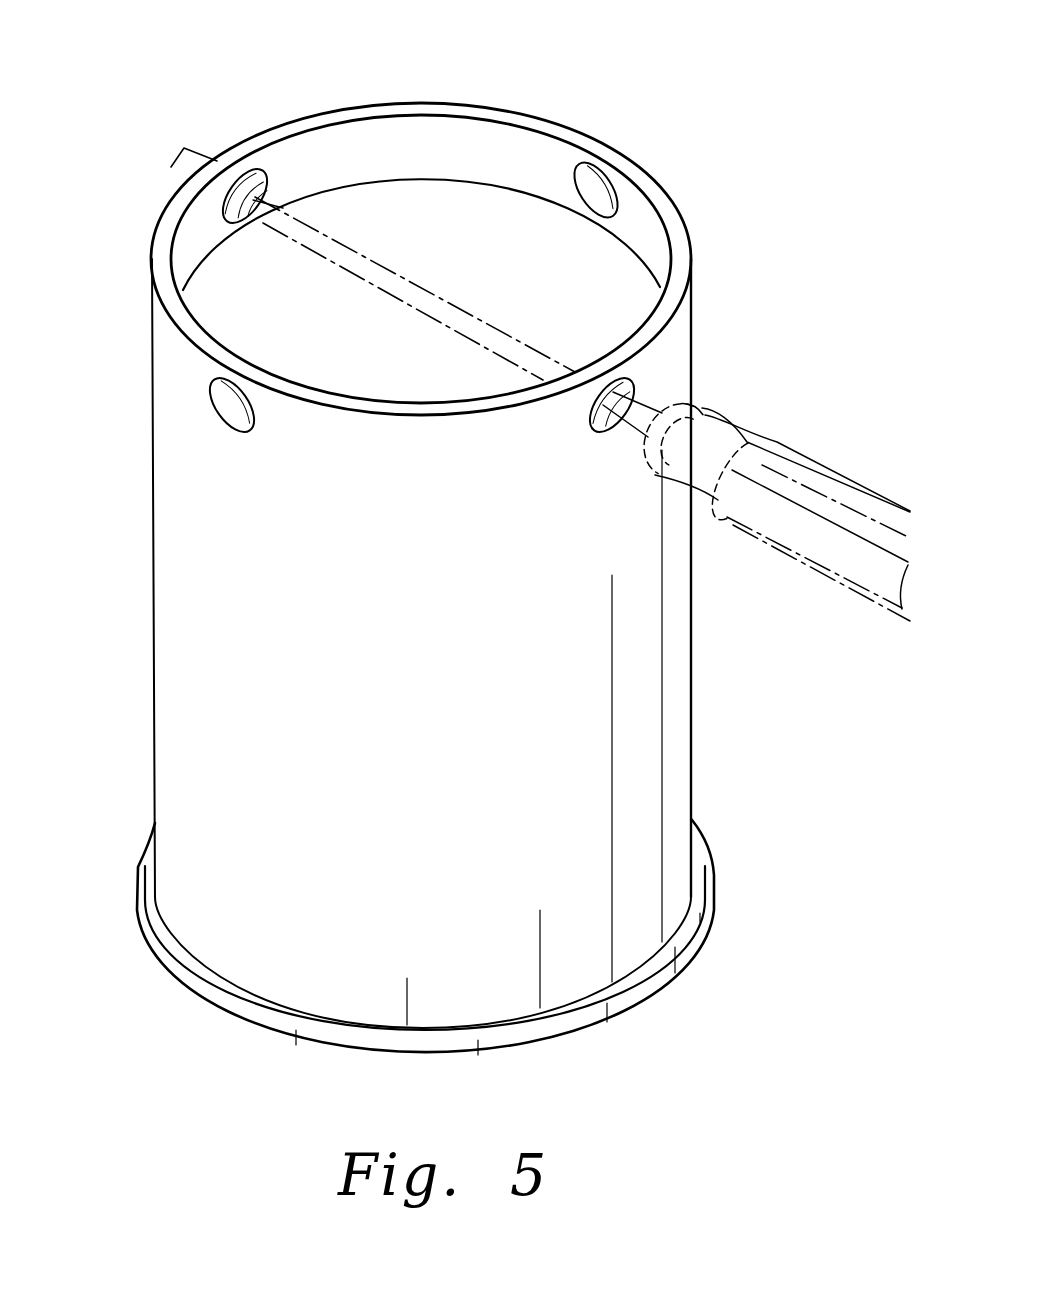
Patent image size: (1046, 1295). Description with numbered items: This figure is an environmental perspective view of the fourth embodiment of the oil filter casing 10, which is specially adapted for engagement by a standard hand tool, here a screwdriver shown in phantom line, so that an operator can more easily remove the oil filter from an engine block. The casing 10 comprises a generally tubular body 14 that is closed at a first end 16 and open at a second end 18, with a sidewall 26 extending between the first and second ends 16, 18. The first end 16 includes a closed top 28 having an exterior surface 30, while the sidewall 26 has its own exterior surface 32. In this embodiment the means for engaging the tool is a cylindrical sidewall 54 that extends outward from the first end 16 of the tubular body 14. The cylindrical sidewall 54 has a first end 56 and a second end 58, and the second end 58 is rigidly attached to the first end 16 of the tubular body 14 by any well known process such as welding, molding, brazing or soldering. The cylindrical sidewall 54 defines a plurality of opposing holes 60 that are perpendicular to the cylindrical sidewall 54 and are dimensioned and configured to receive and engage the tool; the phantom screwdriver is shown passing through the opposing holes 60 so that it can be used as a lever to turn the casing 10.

The oil filter casing 10 is at (792, 137).
The tubular body 14 is at (717, 643).
The first end 16 is at (698, 248).
The second end 18 is at (713, 845).
The sidewall 26 is at (435, 655).
The closed top 28 is at (543, 283).
The exterior surface 30 is at (440, 227).
The exterior surface 32 is at (652, 740).
The cylindrical sidewall 54 is at (420, 166).
The first end 56 is at (628, 155).
The second end 58 is at (628, 242).
The opposing holes 60 is at (233, 402).